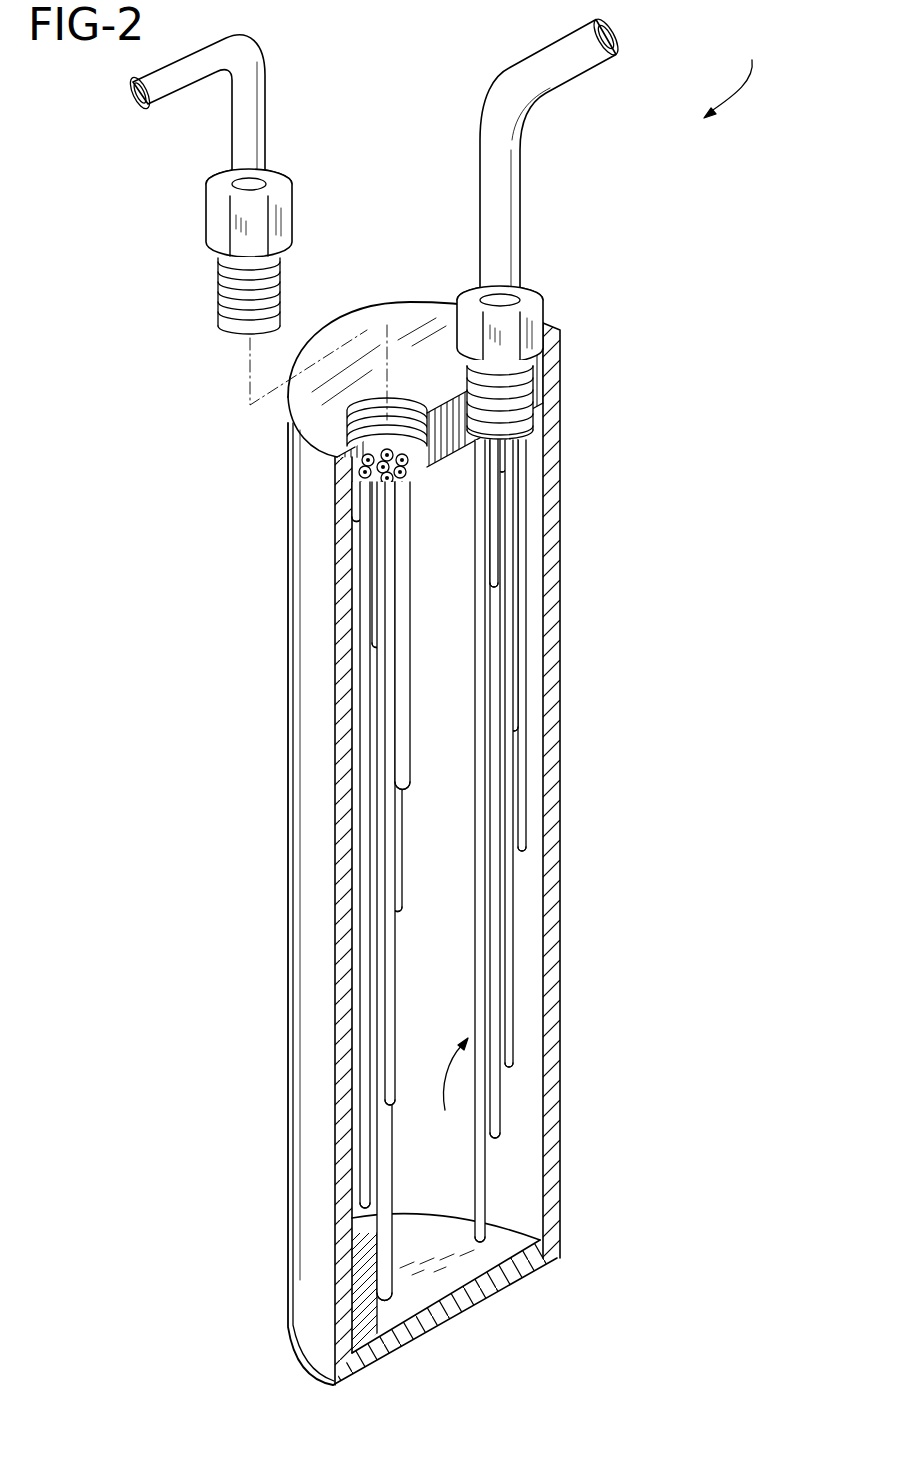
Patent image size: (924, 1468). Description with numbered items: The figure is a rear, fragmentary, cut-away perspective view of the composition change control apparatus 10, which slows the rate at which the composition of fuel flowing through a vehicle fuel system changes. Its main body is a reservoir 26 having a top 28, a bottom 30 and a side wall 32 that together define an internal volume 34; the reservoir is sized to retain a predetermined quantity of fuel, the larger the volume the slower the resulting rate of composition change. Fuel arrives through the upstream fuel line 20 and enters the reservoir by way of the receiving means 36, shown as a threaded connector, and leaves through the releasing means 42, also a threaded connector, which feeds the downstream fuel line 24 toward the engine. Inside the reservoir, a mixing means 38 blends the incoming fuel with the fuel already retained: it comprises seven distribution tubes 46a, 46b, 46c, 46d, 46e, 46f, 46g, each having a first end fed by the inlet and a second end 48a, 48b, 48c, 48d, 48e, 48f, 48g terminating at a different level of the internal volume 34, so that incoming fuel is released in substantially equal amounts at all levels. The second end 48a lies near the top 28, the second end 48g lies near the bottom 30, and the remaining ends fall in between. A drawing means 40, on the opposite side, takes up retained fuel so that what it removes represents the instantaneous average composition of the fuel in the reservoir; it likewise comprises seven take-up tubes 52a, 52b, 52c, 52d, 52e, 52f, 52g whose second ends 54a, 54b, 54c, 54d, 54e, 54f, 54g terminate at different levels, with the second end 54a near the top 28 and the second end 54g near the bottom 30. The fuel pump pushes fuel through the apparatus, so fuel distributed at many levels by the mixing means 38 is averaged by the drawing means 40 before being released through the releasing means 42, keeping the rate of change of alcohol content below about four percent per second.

The composition change control apparatus 10 is at (741, 73).
The upstream fuel line 20 is at (232, 117).
The downstream fuel line 24 is at (565, 83).
The reservoir 26 is at (248, 983).
The top 28 is at (320, 417).
The bottom 30 is at (472, 1308).
The side wall 32 is at (292, 686).
The internal volume 34 is at (452, 997).
The receiving means 36 is at (209, 184).
The mixing means 38 is at (427, 528).
The drawing means 40 is at (445, 1089).
The releasing means 42 is at (540, 227).
The distribution tube 46a is at (353, 489).
The distribution tube 46b is at (375, 596).
The distribution tube 46c is at (400, 752).
The distribution tube 46d is at (398, 860).
The distribution tube 46e is at (390, 1040).
The distribution tube 46f is at (364, 1162).
The distribution tube 46g is at (385, 1255).
The second end 48a is at (357, 518).
The second end 48b is at (378, 645).
The second end 48c is at (404, 787).
The second end 48d is at (398, 910).
The second end 48e is at (390, 1101).
The second end 48f is at (366, 1204).
The second end 48g is at (384, 1299).
The take-up tube 52a is at (503, 456).
The take-up tube 52b is at (497, 530).
The take-up tube 52c is at (515, 678).
The take-up tube 52d is at (523, 802).
The take-up tube 52e is at (510, 945).
The take-up tube 52f is at (498, 1110).
The take-up tube 52g is at (485, 1215).
The second end 54a is at (503, 469).
The second end 54b is at (496, 586).
The second end 54c is at (515, 728).
The second end 54d is at (523, 850).
The second end 54e is at (510, 1064).
The second end 54f is at (498, 1136).
The second end 54g is at (484, 1242).